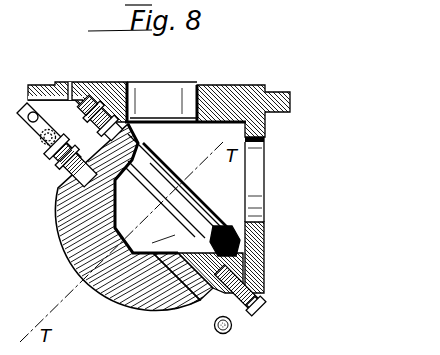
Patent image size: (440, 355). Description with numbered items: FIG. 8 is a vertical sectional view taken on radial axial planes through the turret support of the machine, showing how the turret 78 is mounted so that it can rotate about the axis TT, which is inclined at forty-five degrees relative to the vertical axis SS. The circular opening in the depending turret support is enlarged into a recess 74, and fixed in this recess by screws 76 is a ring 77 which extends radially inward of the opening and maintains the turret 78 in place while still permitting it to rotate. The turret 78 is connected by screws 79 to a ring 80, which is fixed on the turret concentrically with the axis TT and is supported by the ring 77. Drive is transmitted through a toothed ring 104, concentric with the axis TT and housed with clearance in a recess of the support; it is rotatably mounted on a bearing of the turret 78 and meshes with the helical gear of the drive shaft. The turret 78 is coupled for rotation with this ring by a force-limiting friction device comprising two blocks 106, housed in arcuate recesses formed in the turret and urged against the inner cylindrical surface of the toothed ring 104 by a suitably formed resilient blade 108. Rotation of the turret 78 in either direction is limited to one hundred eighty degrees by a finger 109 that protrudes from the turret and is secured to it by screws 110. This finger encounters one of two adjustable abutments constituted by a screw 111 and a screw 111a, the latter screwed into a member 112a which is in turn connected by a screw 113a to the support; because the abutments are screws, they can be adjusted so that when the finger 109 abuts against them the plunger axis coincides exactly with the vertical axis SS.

The recess 74 is at (264, 266).
The screws 76 is at (252, 256).
The ring 77 is at (224, 238).
The turret 78 is at (63, 231).
The screws 79 is at (181, 276).
The ring 80 is at (140, 144).
The toothed ring 104 is at (88, 118).
The blocks 106 is at (155, 159).
The resilient blade 108 is at (158, 177).
The finger 109 is at (27, 126).
The screws 110 is at (68, 172).
The screw 111 is at (40, 148).
The screw 111a is at (214, 328).
The member 112a is at (246, 320).
The screw 113a is at (262, 306).